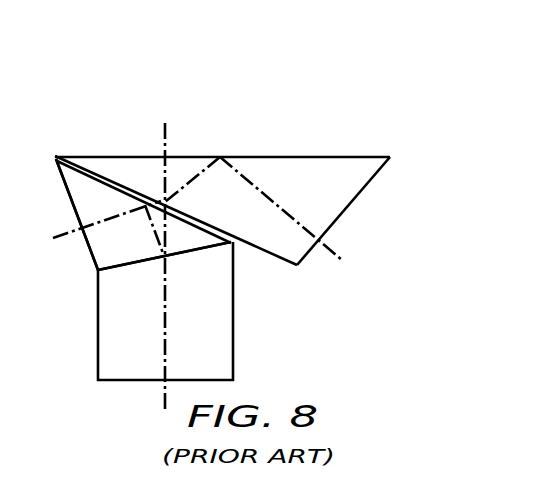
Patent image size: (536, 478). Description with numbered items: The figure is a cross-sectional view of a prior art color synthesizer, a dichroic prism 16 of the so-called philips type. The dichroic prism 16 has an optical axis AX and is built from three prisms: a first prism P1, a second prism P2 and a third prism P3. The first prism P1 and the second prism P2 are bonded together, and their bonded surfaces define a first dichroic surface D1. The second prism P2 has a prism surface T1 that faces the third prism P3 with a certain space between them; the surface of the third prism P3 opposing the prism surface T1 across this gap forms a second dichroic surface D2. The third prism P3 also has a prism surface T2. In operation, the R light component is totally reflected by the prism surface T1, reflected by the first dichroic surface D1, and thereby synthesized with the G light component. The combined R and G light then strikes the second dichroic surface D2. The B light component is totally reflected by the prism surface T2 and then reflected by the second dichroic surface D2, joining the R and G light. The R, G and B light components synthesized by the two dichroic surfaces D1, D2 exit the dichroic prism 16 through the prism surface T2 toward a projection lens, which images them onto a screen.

The dichroic prism 16 is at (251, 129).
The optical axis AX is at (167, 131).
The first prism P1 is at (209, 360).
The second prism P2 is at (130, 247).
The third prism P3 is at (322, 193).
The first dichroic surface D1 is at (193, 251).
The second dichroic surface D2 is at (99, 173).
The prism surface T1 is at (80, 172).
The prism surface T2 is at (305, 157).